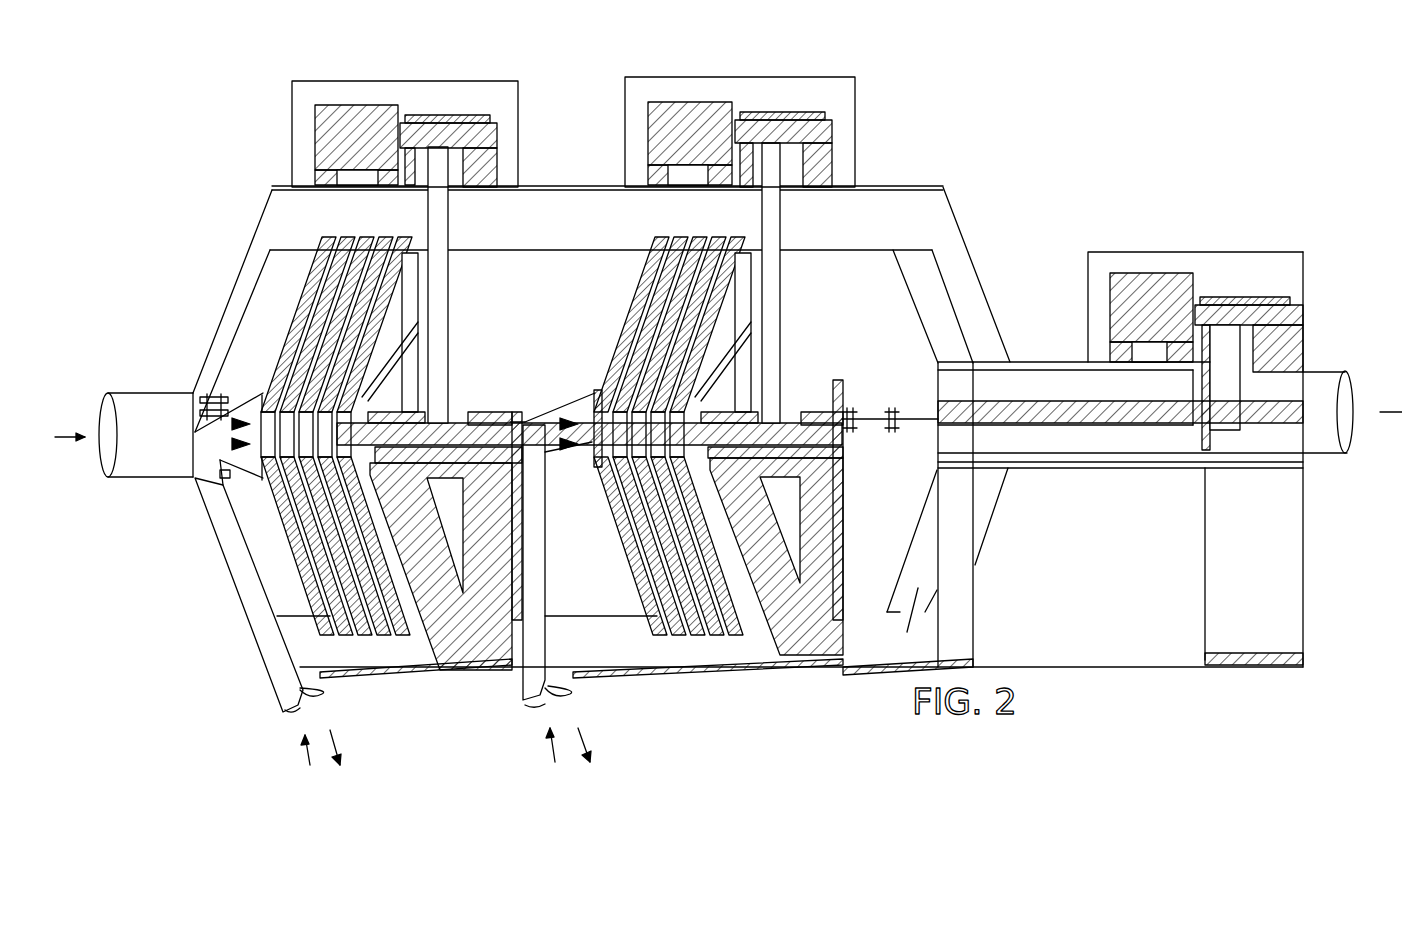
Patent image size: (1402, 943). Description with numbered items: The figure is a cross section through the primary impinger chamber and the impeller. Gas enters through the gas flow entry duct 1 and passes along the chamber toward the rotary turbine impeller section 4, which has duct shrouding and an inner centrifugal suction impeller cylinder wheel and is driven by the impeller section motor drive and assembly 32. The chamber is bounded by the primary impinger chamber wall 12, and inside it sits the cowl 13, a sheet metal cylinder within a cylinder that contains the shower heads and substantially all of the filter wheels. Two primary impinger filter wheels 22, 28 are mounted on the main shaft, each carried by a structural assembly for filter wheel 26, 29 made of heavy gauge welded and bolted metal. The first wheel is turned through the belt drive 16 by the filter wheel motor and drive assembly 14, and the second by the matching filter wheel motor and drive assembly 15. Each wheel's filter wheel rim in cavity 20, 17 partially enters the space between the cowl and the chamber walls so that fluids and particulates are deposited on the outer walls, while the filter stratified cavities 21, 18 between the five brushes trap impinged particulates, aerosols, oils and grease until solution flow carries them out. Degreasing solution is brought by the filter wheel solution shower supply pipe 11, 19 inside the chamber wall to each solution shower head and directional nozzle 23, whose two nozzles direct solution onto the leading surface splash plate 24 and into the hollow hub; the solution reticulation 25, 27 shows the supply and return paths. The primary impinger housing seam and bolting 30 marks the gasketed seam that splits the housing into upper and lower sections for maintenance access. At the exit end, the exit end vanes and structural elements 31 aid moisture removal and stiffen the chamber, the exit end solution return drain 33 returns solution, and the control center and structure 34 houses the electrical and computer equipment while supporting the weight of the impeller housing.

The gas flow entry duct 1 is at (141, 435).
The rotary turbine impeller section 4 is at (1028, 378).
The filter wheel solution shower supply pipe 11 is at (240, 560).
The primary impinger chamber wall 12 is at (223, 318).
The cowl 13 is at (253, 297).
The filter wheel motor and drive assembly 14 is at (408, 105).
The filter wheel motor and drive assembly 15 is at (740, 100).
The belt drive 16 is at (440, 310).
The filter wheel rim in cavity 17 is at (665, 237).
The filter stratified cavities 18 is at (703, 237).
The filter wheel solution shower supply pipe 19 is at (540, 538).
The filter wheel rim in cavity 20 is at (335, 237).
The filter stratified cavities 21 is at (383, 238).
The primary impinger filter wheel 22 is at (318, 305).
The solution shower head and directional nozzle 23 is at (247, 417).
The leading surface splash plate 24 is at (268, 392).
The solution reticulation 25 is at (330, 697).
The structural assembly for filter wheel 26 is at (470, 632).
The solution reticulation 27 is at (580, 693).
The primary impinger filter wheel 28 is at (640, 312).
The structural assembly for filter wheel 29 is at (785, 660).
The primary impinger housing seam and bolting 30 is at (868, 414).
The exit end vanes and structural elements 31 is at (945, 275).
The impeller section motor drive and assembly 32 is at (1216, 270).
The exit end solution return drain 33 is at (918, 553).
The control center and structure 34 is at (1238, 564).